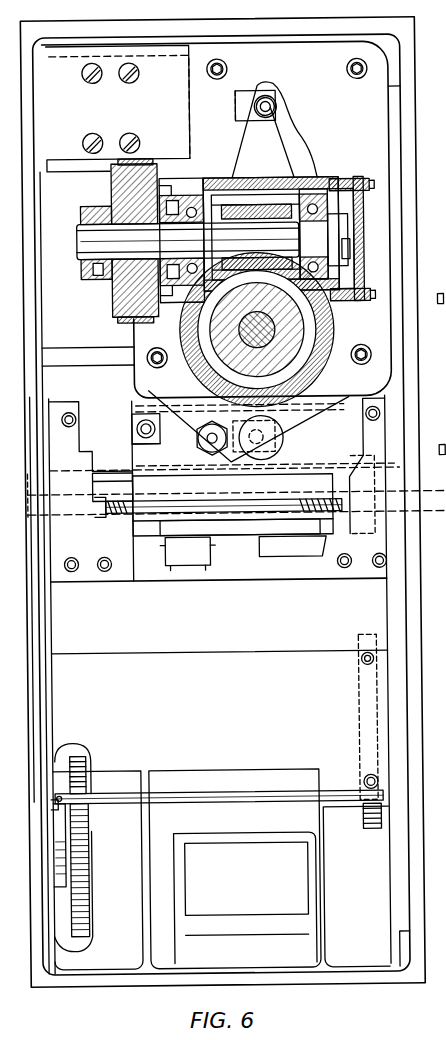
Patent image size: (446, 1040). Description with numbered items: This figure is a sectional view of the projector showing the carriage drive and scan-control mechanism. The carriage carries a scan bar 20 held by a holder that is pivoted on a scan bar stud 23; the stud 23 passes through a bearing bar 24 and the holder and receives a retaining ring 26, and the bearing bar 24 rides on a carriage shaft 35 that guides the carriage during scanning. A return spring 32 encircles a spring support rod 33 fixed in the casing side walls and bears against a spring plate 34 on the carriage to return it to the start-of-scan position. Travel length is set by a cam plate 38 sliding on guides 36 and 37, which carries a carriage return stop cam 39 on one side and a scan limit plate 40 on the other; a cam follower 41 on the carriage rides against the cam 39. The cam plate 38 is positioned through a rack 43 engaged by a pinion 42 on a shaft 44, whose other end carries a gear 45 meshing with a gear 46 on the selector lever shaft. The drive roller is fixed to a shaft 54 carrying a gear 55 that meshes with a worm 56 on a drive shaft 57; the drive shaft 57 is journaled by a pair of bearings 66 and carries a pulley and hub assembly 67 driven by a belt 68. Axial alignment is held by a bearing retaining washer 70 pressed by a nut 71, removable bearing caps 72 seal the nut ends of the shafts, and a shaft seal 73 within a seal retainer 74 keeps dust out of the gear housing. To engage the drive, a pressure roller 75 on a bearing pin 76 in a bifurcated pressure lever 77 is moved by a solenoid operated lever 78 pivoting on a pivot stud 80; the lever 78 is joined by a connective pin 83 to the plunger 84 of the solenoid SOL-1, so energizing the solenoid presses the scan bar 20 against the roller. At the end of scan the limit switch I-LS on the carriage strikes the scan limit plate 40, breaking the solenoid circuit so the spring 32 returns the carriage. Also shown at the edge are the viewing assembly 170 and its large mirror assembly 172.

The scan bar 20 is at (360, 397).
The scan bar stud 23 is at (136, 427).
The bearing bar 24 is at (132, 442).
The retaining ring 26 is at (148, 416).
The return spring 32 is at (114, 520).
The spring support rod 33 is at (55, 508).
The spring plate 34 is at (368, 476).
The carriage shaft 35 is at (100, 472).
The guide 36 is at (386, 603).
The guide 37 is at (50, 600).
The cam plate 38 is at (204, 656).
The carriage return stop cam 39 is at (350, 421).
The scan limit plate 40 is at (80, 408).
The cam follower 41 is at (290, 558).
The pinion 42 is at (358, 822).
The rack 43 is at (356, 638).
The shaft 44 is at (326, 792).
The gear 45 is at (86, 788).
The gear 46 is at (85, 912).
The shaft 54 is at (272, 329).
The gear 55 is at (323, 329).
The worm 56 is at (248, 208).
The drive shaft 57 is at (79, 243).
The bearings 66 is at (198, 222).
The pulley and hub assembly 67 is at (112, 306).
The belt 68 is at (124, 318).
The bearing retaining washer 70 is at (355, 211).
The nut 71 is at (358, 226).
The removable bearing caps 72 is at (374, 296).
The shaft seal 73 is at (166, 212).
The seal retainer 74 is at (172, 303).
The pressure roller 75 is at (285, 438).
The bearing pin 76 is at (254, 435).
The pressure lever 77 is at (284, 449).
The solenoid operated lever 78 is at (254, 128).
The pivot stud 80 is at (197, 443).
The connective pin 83 is at (262, 114).
The plunger 84 is at (262, 97).
The viewing assembly 170 is at (439, 690).
The large mirror assembly 172 is at (438, 530).
The solenoid SOL-1 is at (56, 155).
The limit switch I-LS is at (164, 562).